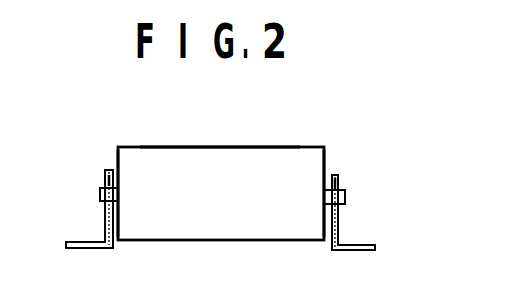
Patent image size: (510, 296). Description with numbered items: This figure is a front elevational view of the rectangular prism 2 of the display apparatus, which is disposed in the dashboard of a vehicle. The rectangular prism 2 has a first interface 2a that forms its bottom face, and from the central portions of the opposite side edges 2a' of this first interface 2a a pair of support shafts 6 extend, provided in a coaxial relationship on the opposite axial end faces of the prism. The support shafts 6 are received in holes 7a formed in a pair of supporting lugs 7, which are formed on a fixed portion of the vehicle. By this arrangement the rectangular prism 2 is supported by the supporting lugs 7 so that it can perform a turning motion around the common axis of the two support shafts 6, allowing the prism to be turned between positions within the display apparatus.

The rectangular prism 2 is at (305, 146).
The first interface 2a is at (220, 134).
The side edges of the first interface 2a' is at (224, 179).
The support shaft 6 is at (101, 194).
The supporting lug 7 is at (108, 216).
The hole of supporting lug 7a is at (104, 207).